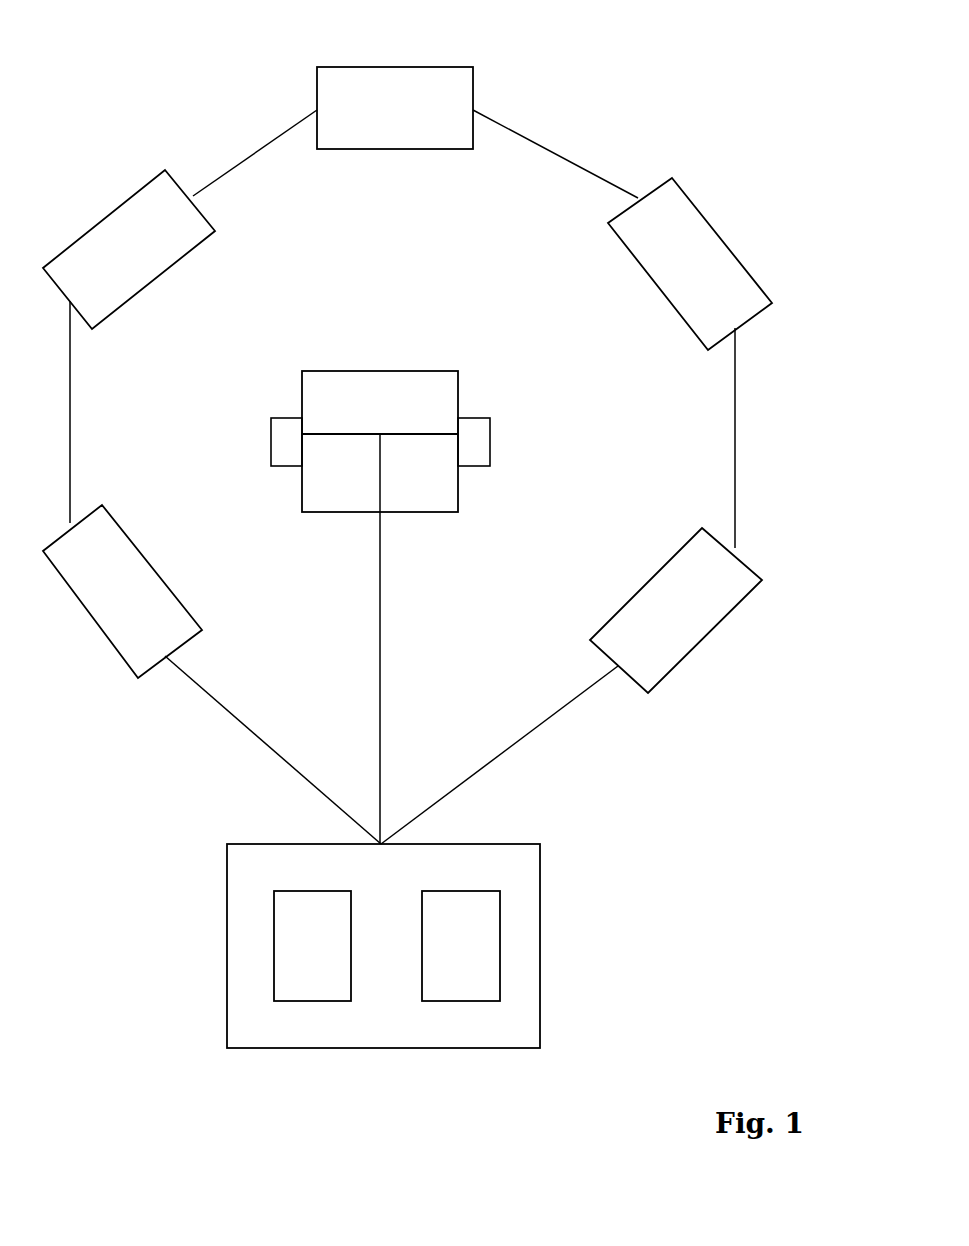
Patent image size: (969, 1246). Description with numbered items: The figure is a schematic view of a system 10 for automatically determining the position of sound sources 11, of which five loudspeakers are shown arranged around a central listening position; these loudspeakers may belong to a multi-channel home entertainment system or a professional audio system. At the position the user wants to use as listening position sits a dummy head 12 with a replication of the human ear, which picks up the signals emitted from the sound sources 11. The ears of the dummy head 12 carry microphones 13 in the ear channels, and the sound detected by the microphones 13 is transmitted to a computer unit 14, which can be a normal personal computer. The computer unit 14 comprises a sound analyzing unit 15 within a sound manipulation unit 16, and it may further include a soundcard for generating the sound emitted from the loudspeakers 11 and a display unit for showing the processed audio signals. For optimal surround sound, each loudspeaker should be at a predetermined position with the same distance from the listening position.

The system 10 is at (407, 564).
The sound sources 11 is at (667, 181).
The dummy head 12 is at (379, 390).
The microphones 13 is at (271, 452).
The computer unit 14 is at (413, 1051).
The sound analyzing unit 15 is at (288, 1003).
The sound manipulation unit 16 is at (493, 957).